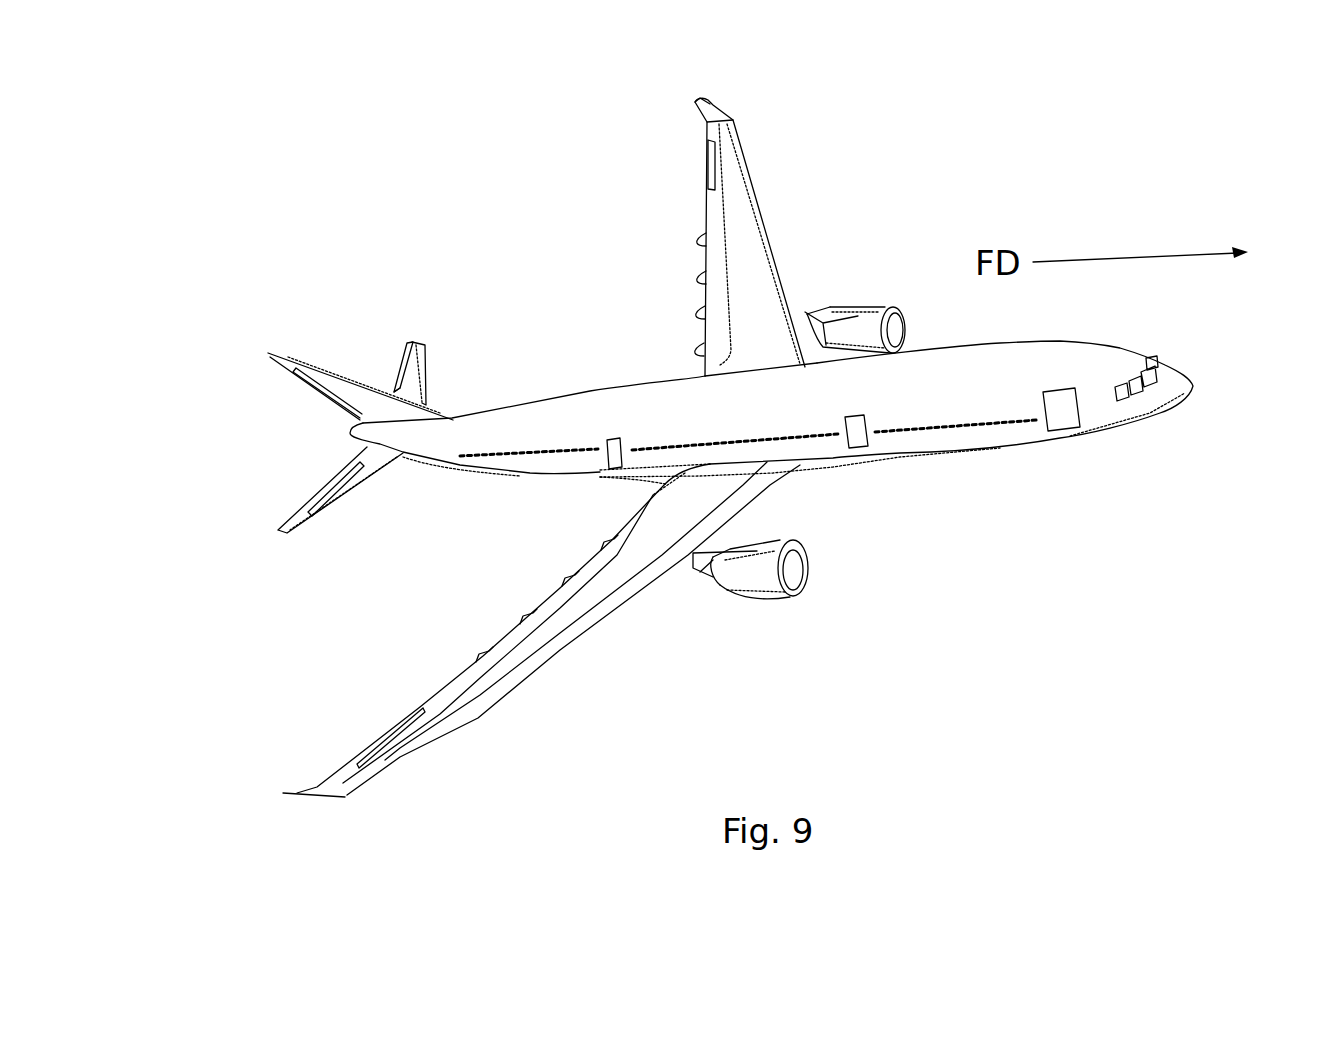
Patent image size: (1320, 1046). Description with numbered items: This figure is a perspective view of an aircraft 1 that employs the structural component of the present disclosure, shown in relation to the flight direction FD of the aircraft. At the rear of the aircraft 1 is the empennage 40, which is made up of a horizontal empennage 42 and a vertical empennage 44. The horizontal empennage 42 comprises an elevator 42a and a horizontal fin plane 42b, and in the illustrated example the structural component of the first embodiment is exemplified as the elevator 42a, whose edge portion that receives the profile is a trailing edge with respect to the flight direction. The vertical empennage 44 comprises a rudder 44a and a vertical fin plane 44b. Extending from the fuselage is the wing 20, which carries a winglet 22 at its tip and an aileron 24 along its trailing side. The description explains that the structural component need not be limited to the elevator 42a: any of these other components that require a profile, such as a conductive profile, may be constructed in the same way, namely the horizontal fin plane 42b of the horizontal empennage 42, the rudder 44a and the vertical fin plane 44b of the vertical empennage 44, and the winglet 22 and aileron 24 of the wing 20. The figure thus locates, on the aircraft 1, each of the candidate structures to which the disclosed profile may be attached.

The aircraft 1 is at (463, 168).
The wing 20 is at (705, 224).
The winglet 22 is at (710, 108).
The aileron 24 is at (711, 168).
The empennage 40 is at (344, 286).
The horizontal empennage 42 is at (440, 366).
The elevator 42a is at (398, 377).
The horizontal fin plane 42b is at (427, 343).
The vertical empennage 44 is at (262, 366).
The rudder 44a is at (312, 392).
The vertical fin plane 44b is at (270, 350).